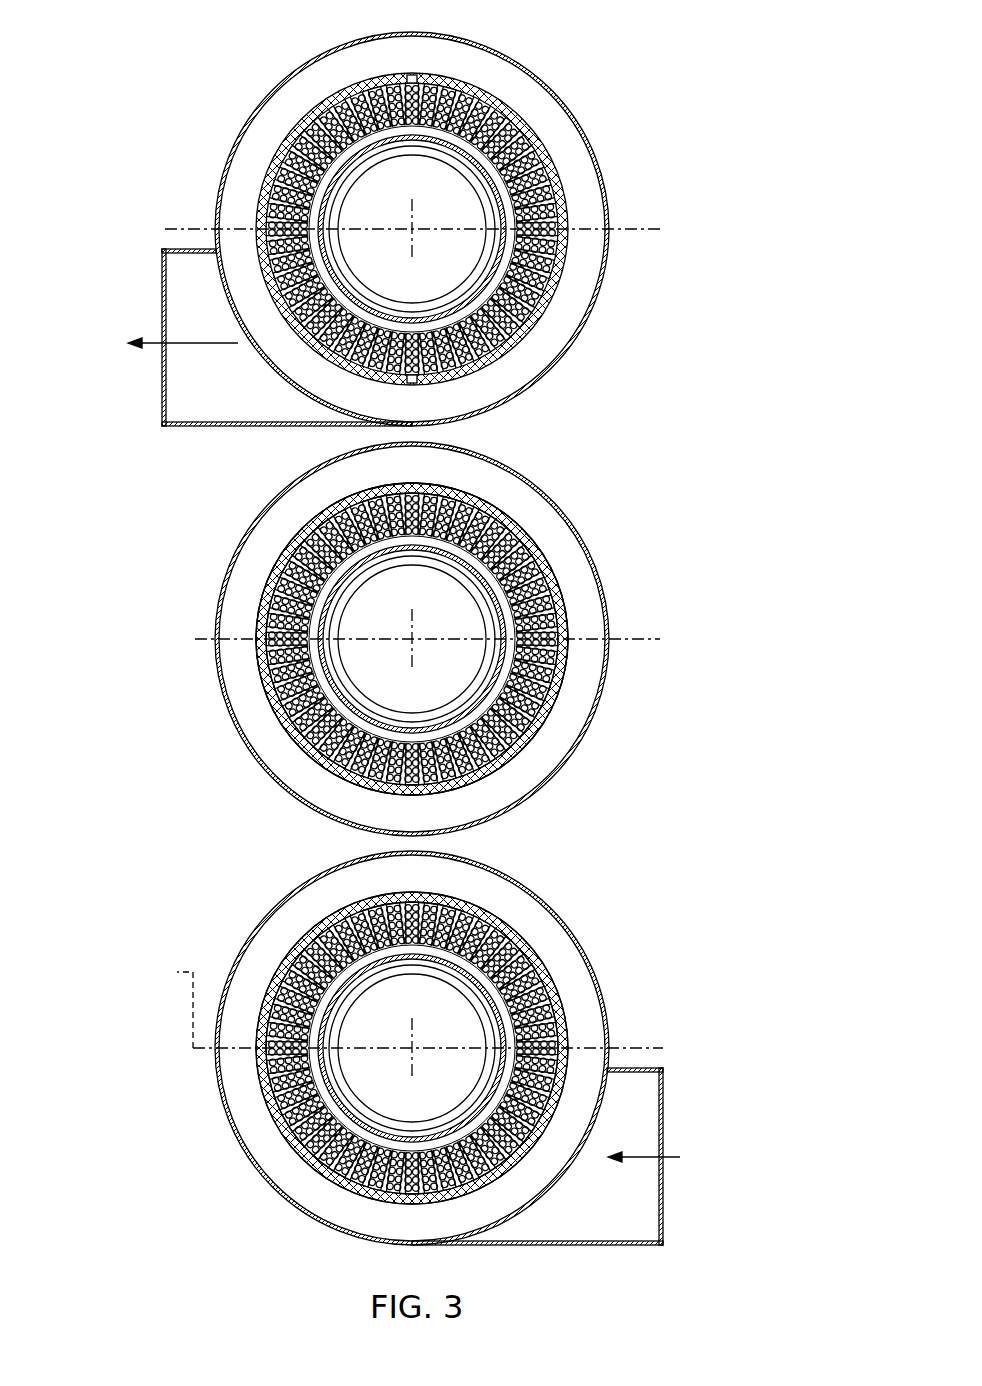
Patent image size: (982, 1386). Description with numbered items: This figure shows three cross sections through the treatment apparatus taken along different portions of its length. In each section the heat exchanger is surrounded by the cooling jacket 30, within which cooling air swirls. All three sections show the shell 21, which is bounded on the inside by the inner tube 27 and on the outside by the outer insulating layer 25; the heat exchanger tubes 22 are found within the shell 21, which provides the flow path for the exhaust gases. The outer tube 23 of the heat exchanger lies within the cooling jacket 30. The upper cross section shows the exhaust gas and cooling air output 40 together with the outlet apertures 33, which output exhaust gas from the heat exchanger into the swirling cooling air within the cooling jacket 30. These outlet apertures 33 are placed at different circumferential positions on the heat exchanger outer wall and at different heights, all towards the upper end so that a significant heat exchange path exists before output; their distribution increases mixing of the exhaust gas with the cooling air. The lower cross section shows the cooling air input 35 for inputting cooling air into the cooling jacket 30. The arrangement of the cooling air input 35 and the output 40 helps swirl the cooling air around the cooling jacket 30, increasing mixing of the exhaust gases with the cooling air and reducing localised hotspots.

The shell 21 is at (543, 317).
The heat exchanger tubes 22 is at (553, 680).
The outer tube 23 is at (555, 988).
The outer insulating layer 25 is at (288, 742).
The inner tube 27 is at (343, 290).
The cooling jacket 30 is at (592, 211).
The outlet apertures 33 is at (412, 75).
The cooling air input 35 is at (656, 1128).
The exhaust gas and cooling air output 40 is at (165, 343).